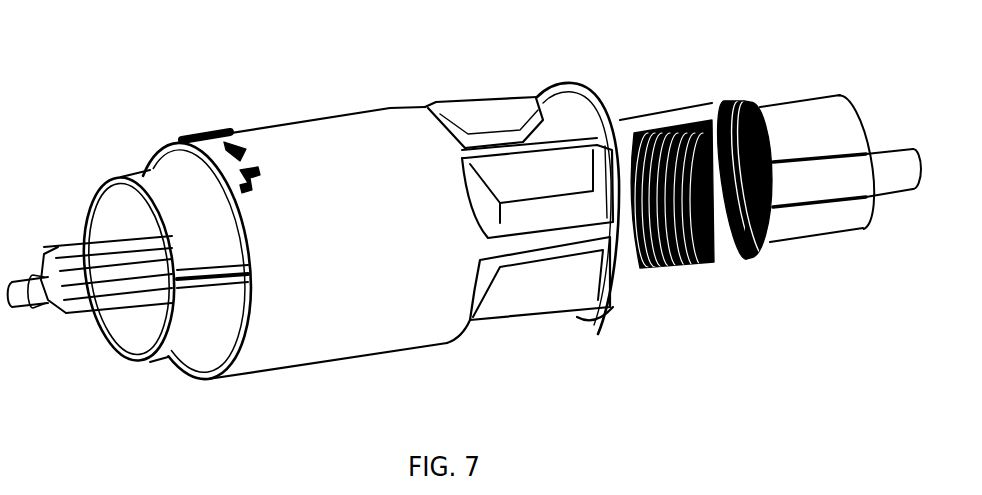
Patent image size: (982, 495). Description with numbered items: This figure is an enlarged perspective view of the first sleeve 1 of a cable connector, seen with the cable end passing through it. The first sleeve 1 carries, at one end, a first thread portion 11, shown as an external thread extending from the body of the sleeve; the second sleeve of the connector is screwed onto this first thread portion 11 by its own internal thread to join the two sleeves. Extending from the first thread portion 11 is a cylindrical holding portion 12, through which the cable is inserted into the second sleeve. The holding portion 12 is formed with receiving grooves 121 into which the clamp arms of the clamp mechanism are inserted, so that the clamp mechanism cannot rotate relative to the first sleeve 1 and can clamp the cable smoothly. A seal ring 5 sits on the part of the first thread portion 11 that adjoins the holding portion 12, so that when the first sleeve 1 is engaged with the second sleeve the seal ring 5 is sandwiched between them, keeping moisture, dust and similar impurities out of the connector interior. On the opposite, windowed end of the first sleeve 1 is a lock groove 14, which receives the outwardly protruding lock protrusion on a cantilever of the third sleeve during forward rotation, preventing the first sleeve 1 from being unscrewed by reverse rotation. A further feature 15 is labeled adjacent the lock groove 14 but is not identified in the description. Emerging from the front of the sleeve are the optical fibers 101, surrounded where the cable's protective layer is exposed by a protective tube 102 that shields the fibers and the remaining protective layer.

The first sleeve 1 is at (332, 288).
The seal ring 5 is at (707, 105).
The first thread portion 11 is at (682, 222).
The holding portion 12 is at (814, 145).
The receiving grooves 121 is at (787, 187).
The lock groove 14 is at (266, 176).
The latch protrusion 15 is at (230, 132).
The optical fiber 101 is at (30, 283).
The protective tube 102 is at (123, 287).